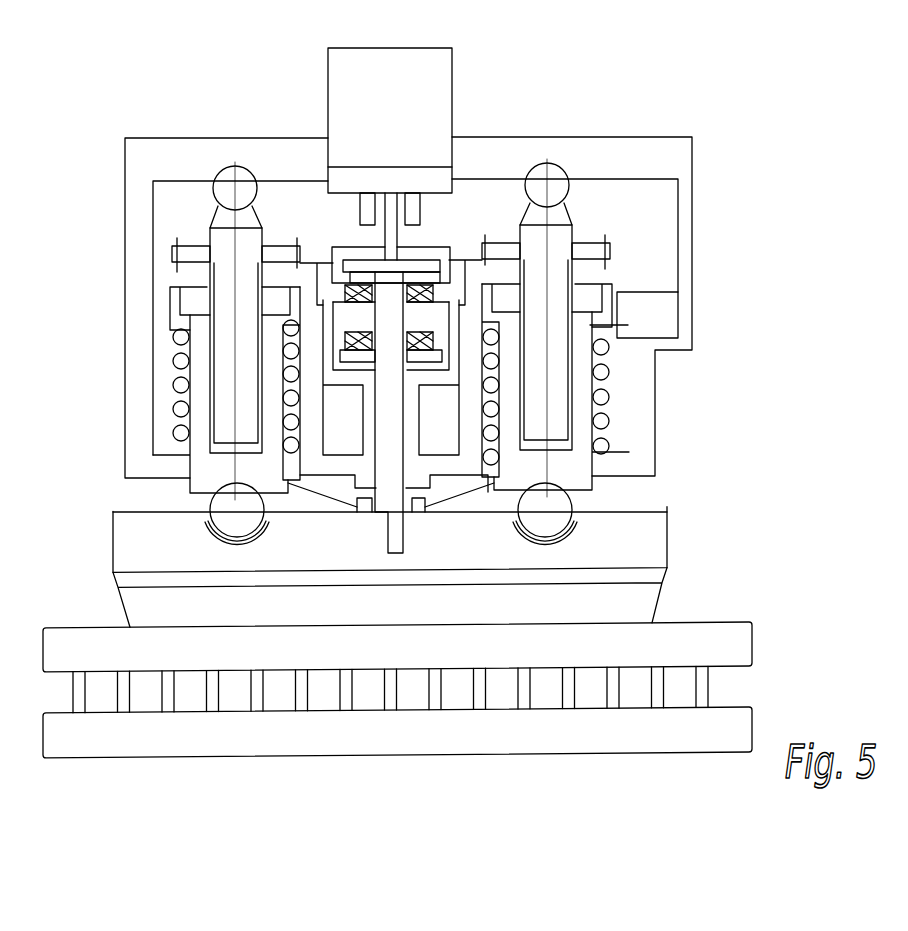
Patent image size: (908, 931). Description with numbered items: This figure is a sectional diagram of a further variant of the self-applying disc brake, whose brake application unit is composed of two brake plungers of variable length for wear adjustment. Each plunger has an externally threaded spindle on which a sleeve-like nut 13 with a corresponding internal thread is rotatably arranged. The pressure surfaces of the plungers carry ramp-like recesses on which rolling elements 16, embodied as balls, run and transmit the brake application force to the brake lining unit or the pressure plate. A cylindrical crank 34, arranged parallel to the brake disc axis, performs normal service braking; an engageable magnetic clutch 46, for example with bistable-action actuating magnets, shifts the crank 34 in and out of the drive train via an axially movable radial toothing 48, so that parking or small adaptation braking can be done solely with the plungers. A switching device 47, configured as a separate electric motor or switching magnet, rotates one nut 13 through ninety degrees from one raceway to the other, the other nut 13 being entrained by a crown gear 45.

The nut 13 is at (598, 290).
The rolling elements 16 is at (585, 503).
The crank 34 is at (393, 500).
The crown gear 45 is at (300, 262).
The magnetic clutch 46 is at (458, 340).
The switching device 47 is at (662, 318).
The radial toothing 48 is at (445, 352).